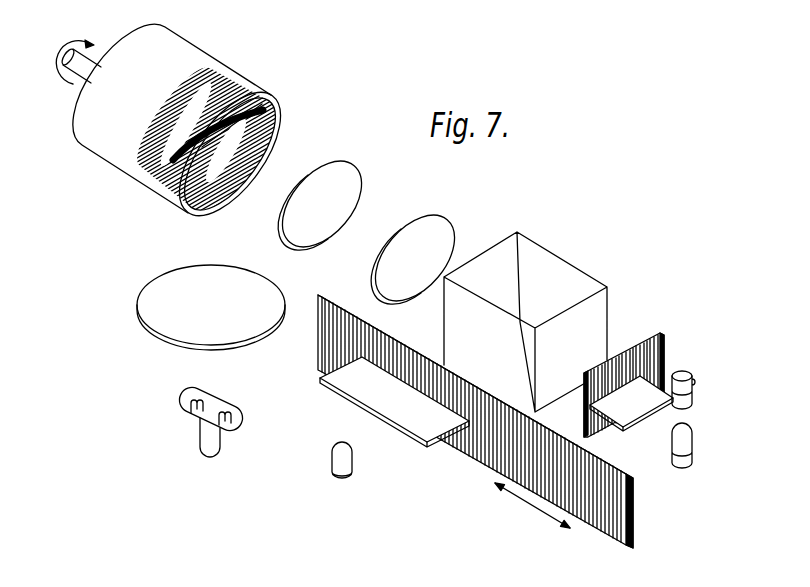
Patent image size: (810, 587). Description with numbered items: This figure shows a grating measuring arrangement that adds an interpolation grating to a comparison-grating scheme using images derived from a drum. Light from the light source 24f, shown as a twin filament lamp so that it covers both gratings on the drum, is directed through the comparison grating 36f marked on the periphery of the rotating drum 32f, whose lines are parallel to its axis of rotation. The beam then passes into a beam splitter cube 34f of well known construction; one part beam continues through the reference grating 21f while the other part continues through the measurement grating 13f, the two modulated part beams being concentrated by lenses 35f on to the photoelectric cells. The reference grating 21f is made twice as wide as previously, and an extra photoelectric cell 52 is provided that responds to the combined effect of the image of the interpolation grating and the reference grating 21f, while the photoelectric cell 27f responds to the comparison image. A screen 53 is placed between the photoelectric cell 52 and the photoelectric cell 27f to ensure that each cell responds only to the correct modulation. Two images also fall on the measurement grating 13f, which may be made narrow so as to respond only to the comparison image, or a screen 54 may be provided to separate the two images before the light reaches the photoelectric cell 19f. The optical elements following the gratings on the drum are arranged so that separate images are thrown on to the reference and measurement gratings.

The drum 32f is at (168, 45).
The comparison grating 36f is at (270, 124).
The lenses 35f is at (414, 218).
The beam splitter cube 34f is at (559, 270).
The measurement grating 13f is at (473, 455).
The screen 54 is at (408, 418).
The reference grating 21f is at (635, 348).
The screen 53 is at (620, 418).
The photoelectric cell 27f is at (683, 376).
The extra photoelectric cell 52 is at (678, 439).
The photoelectric cell 19f is at (333, 454).
The light source 24f is at (187, 418).